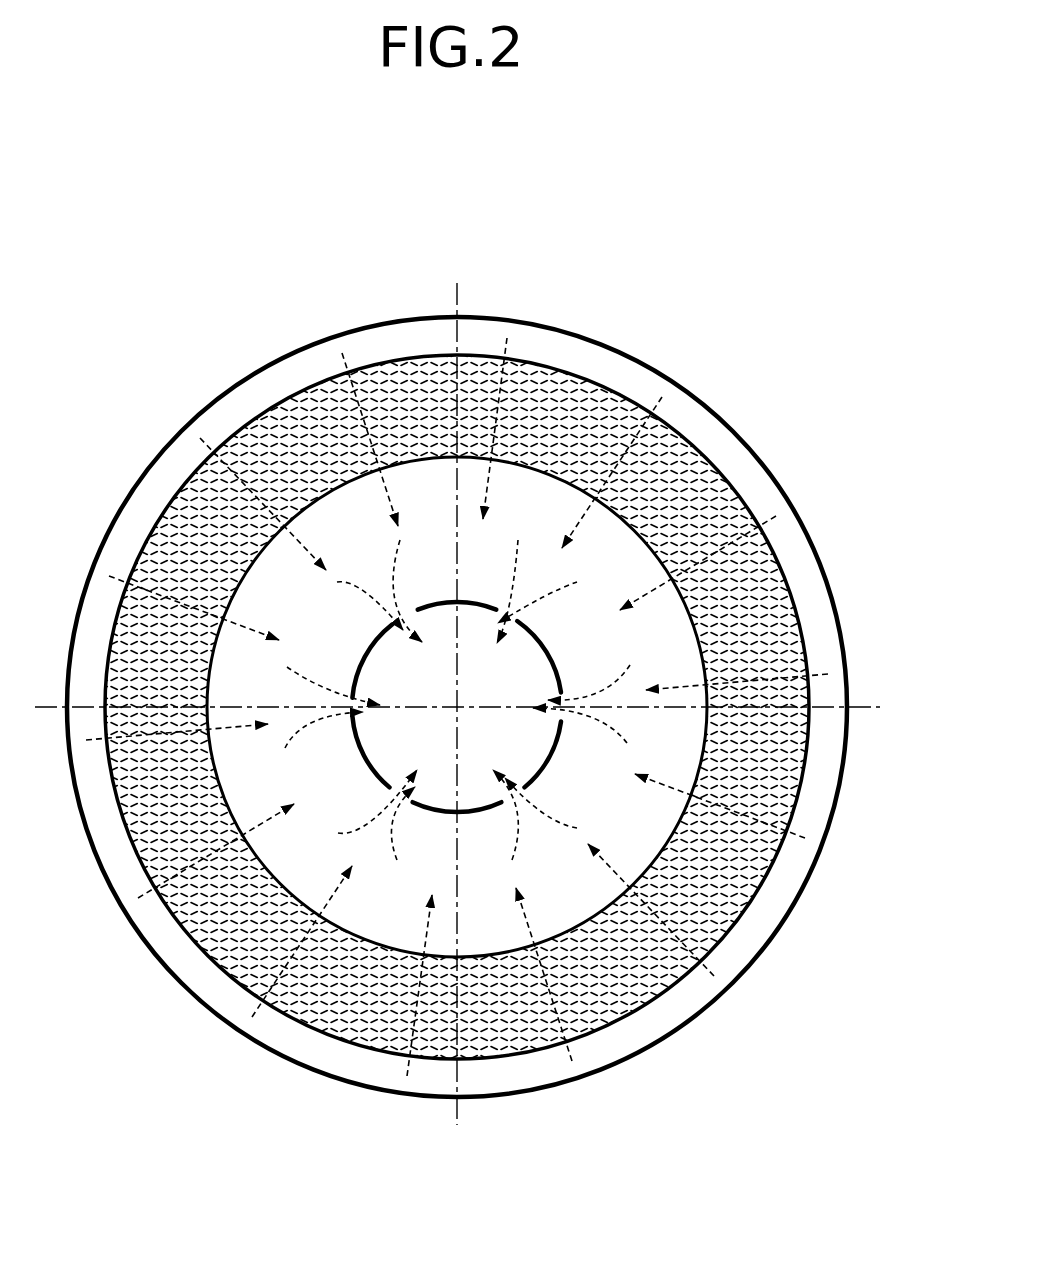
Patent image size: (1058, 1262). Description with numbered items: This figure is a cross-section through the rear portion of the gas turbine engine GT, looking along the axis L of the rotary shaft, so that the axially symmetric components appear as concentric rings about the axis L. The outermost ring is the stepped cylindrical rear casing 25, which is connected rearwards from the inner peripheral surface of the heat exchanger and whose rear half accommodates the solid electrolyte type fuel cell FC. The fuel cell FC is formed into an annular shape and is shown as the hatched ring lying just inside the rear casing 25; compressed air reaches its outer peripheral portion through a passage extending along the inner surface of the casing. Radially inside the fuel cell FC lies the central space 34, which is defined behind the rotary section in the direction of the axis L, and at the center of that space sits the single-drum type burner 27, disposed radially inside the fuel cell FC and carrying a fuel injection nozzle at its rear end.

The rear casing 25 is at (303, 350).
The gas turbine engine GT is at (715, 368).
The solid electrolyte type fuel cell FC is at (160, 510).
The space 34 is at (340, 636).
The burner 27 is at (545, 638).
The axis L is at (457, 705).